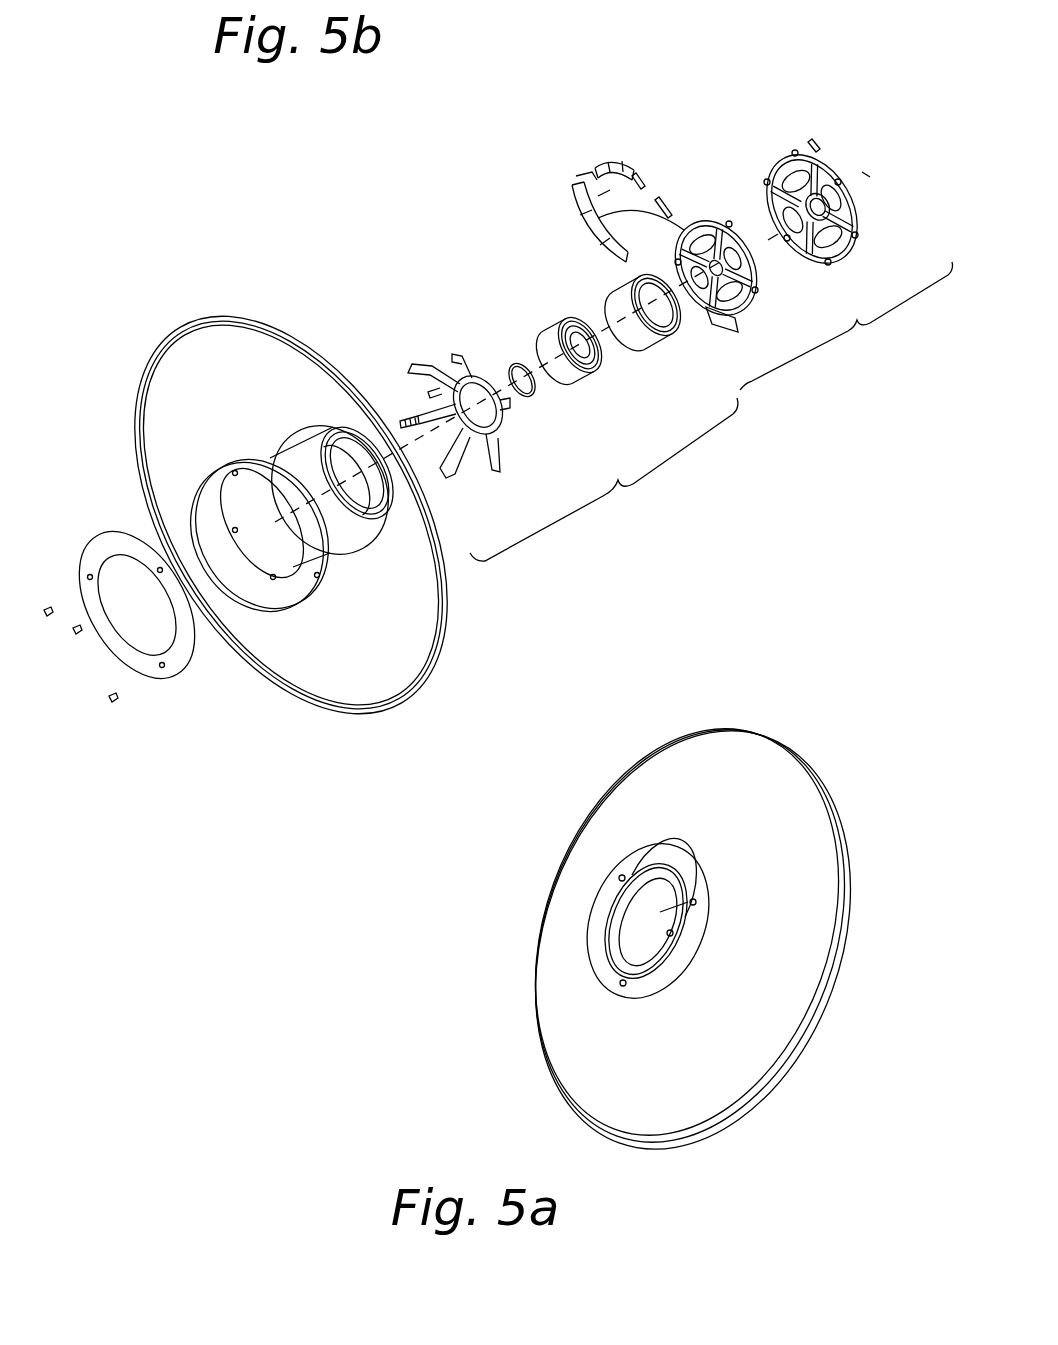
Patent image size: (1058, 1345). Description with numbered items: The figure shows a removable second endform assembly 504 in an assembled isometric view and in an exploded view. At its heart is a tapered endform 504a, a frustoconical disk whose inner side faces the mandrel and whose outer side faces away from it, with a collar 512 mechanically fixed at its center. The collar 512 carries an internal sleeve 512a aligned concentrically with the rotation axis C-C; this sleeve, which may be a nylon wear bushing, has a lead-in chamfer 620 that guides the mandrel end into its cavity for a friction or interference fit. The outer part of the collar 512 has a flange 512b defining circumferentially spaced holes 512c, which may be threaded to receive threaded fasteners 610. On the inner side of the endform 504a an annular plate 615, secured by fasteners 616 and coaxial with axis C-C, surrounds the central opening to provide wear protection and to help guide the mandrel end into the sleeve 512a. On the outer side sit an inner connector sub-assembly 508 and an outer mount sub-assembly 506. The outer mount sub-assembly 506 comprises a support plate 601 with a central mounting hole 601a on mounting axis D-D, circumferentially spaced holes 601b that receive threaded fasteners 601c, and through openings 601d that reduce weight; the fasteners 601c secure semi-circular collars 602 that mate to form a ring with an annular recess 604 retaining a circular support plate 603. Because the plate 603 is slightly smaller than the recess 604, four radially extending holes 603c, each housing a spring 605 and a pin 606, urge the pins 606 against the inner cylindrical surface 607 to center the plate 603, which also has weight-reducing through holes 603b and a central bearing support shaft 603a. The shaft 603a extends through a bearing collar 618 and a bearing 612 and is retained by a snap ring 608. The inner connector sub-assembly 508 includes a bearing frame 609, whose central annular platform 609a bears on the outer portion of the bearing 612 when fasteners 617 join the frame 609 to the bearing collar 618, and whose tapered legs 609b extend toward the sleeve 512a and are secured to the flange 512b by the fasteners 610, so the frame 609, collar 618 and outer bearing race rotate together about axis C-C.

In FIG. 5B, the second endform assembly 504 is at (287, 465).
In FIG. 5A, the second endform assembly 504 is at (813, 748).
In FIG. 5B, the endform 504a is at (192, 382).
In FIG. 5B, the outer mount sub-assembly 506 is at (719, 239).
In FIG. 5B, the inner connector sub-assembly 508 is at (548, 403).
In FIG. 5B, the collar 512 is at (442, 510).
In FIG. 5B, the internal sleeve 512a is at (390, 500).
In FIG. 5B, the flange 512b is at (262, 578).
In FIG. 5B, the circumferentially spaced holes 512c is at (290, 593).
In FIG. 5B, the support plate 601 is at (824, 196).
In FIG. 5B, the central mounting hole 601a is at (793, 151).
In FIG. 5B, the circumferentially spaced holes 601b is at (858, 237).
In FIG. 5B, the threaded fasteners 601c is at (822, 146).
In FIG. 5B, the through openings 601d is at (848, 205).
In FIG. 5B, the collars 602 is at (660, 228).
In FIG. 5B, the circular support plate 603 is at (676, 270).
In FIG. 5B, the bearing support shaft 603a is at (690, 305).
In FIG. 5B, the through holes 603b is at (755, 323).
In FIG. 5B, the radially extending holes 603c is at (598, 218).
In FIG. 5B, the annular recess 604 is at (617, 155).
In FIG. 5B, the spring 605 is at (666, 207).
In FIG. 5B, the pin 606 is at (643, 180).
In FIG. 5B, the inner diameter cylindrical surface 607 is at (585, 207).
In FIG. 5B, the snap ring 608 is at (527, 397).
In FIG. 5B, the bearing frame 609 is at (455, 390).
In FIG. 5B, the central annular platform 609a is at (493, 377).
In FIG. 5B, the legs 609b is at (505, 460).
In FIG. 5B, the fasteners 610 is at (440, 353).
In FIG. 5B, the bearing 612 is at (575, 383).
In FIG. 5B, the annular plate 615 is at (112, 532).
In FIG. 5A, the annular plate 615 is at (593, 953).
In FIG. 5B, the fasteners 616 is at (75, 627).
In FIG. 5B, the fasteners 617 is at (432, 398).
In FIG. 5B, the bearing collar 618 is at (607, 300).
In FIG. 5A, the lead-in chamfer 620 is at (632, 893).